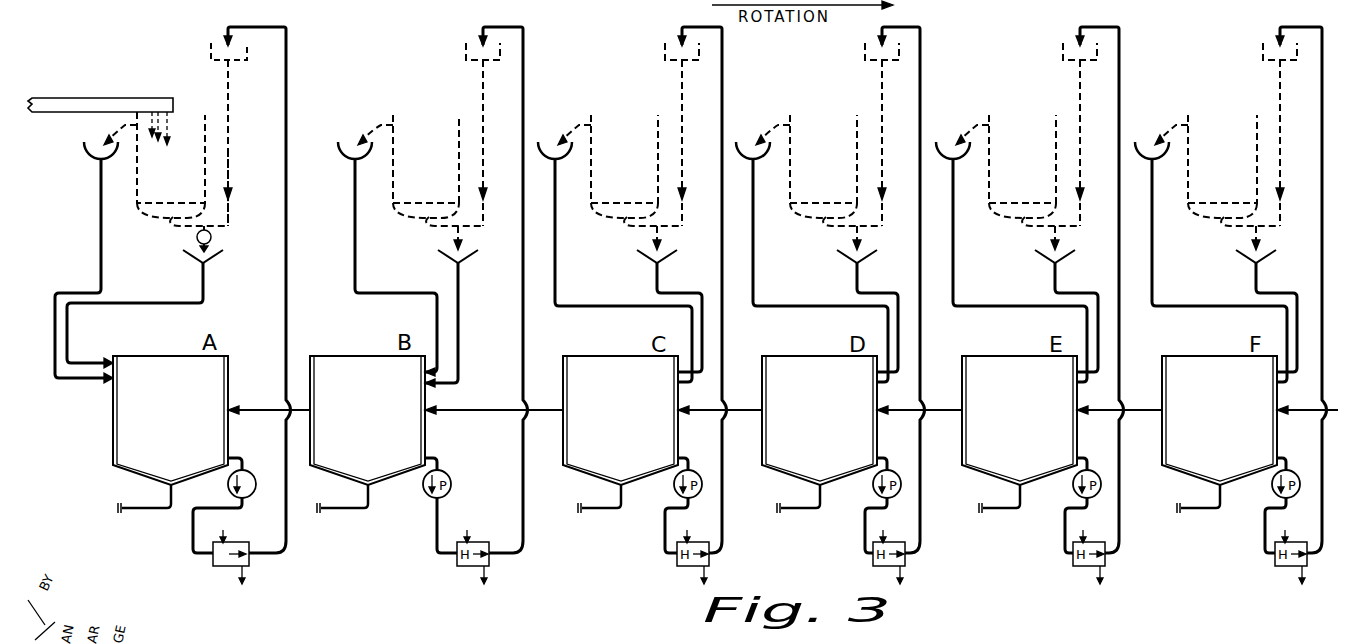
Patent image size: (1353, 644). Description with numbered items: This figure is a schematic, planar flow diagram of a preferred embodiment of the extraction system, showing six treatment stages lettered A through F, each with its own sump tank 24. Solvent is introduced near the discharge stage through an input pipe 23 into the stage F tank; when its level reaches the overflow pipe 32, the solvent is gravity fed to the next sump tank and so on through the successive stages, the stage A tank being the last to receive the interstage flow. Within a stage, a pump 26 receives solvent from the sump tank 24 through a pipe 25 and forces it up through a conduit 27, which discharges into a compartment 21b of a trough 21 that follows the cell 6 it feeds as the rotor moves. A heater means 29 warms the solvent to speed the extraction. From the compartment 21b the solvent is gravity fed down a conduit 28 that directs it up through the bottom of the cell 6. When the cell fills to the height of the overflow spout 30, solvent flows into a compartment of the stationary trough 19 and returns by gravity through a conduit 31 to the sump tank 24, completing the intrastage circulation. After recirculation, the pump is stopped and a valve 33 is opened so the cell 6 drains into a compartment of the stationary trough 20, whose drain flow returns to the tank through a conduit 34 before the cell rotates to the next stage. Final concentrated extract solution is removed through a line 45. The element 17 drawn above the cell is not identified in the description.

The cell 6 is at (137, 188).
The feed conveyor 17 is at (96, 98).
The stationary trough 19 is at (94, 158).
The stationary trough 20 is at (222, 254).
The trough 21 is at (247, 62).
The compartment 21b is at (218, 38).
The input pipe 23 is at (1310, 413).
The sump tank 24 is at (113, 432).
The pipe 25 is at (232, 447).
The pump 26 is at (228, 486).
The conduit 27 is at (288, 326).
The conduit 28 is at (233, 186).
The heater means 29 is at (223, 568).
The overflow spout 30 is at (108, 128).
The conduit 31 is at (55, 338).
The overflow pipe 32 is at (272, 408).
The valve 33 is at (214, 237).
The conduit 34 is at (70, 344).
The line 45 is at (163, 507).